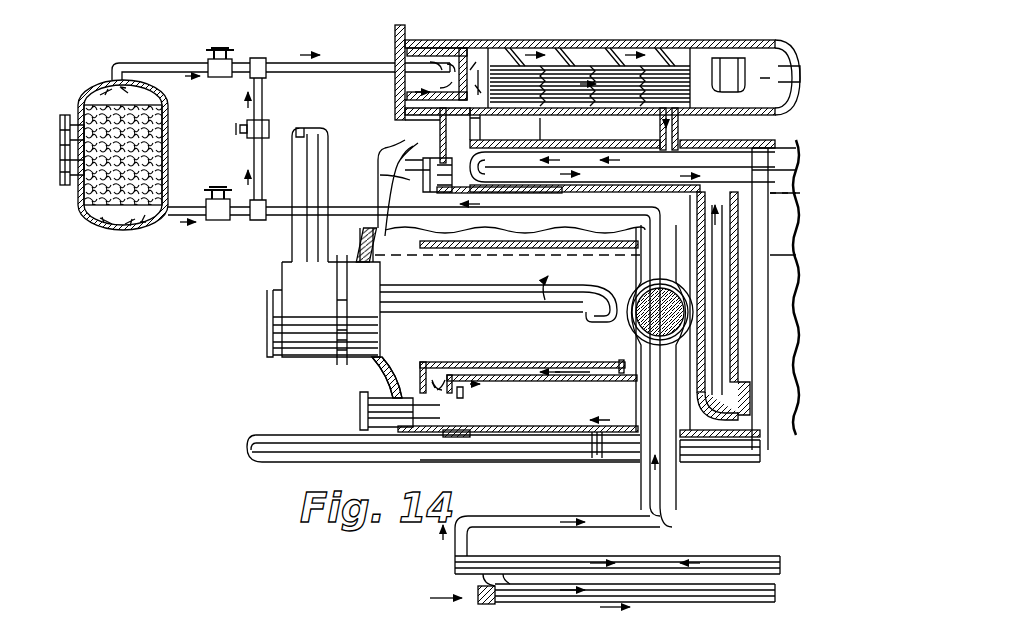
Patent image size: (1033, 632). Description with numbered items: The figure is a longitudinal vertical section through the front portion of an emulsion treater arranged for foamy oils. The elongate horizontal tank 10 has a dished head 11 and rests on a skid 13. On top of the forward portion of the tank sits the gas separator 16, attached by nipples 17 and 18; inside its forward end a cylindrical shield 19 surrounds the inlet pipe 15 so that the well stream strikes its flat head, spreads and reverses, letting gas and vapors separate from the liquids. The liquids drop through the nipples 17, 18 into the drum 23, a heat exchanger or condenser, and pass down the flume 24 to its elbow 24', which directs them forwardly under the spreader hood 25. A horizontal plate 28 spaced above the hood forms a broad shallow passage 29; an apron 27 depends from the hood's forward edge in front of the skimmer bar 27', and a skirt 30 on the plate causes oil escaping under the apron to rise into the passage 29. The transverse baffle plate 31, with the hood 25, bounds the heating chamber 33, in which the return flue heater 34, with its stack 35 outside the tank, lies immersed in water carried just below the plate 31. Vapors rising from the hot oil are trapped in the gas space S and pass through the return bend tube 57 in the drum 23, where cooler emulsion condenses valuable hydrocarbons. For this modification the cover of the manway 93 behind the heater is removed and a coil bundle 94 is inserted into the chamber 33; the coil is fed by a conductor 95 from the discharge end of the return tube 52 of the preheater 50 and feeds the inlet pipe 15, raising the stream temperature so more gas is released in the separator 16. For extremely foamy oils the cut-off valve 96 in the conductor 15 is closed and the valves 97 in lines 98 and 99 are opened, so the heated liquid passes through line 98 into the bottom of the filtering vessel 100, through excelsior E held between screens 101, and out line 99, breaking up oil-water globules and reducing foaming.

The tank 10 is at (748, 140).
The head 11 is at (392, 165).
The skid 13 is at (300, 455).
The inlet pipe 15 is at (327, 63).
The gas separator 16 is at (565, 48).
The nipple 17 is at (478, 128).
The nipple 18 is at (655, 125).
The cylindrical shield 19 is at (430, 62).
The drum 23 is at (535, 140).
The flume 24 is at (721, 348).
The elbow 24' is at (700, 355).
The spreader hood 25 is at (508, 382).
The apron 27 is at (522, 351).
The skimmer bar 27' is at (542, 400).
The horizontal plate 28 is at (555, 372).
The passage 29 is at (505, 375).
The skirt 30 is at (368, 397).
The baffle plate 31 is at (545, 260).
The heating chamber 33 is at (445, 275).
The heater 34 is at (385, 372).
The stack 35 is at (308, 133).
The preheater 50 is at (695, 565).
The return tube 52 is at (640, 560).
The return bend tube 57 is at (672, 165).
The manway 93 is at (630, 325).
The coil bundle 94 is at (652, 450).
The conductor 95 is at (535, 520).
The cut-off valve 96 is at (270, 129).
The valves 97 is at (218, 46).
The line 98 is at (192, 217).
The line 99 is at (140, 64).
The filtering vessel 100 is at (168, 142).
The screens 101 is at (97, 78).
The excelsior E is at (76, 104).
The gas space S is at (483, 150).